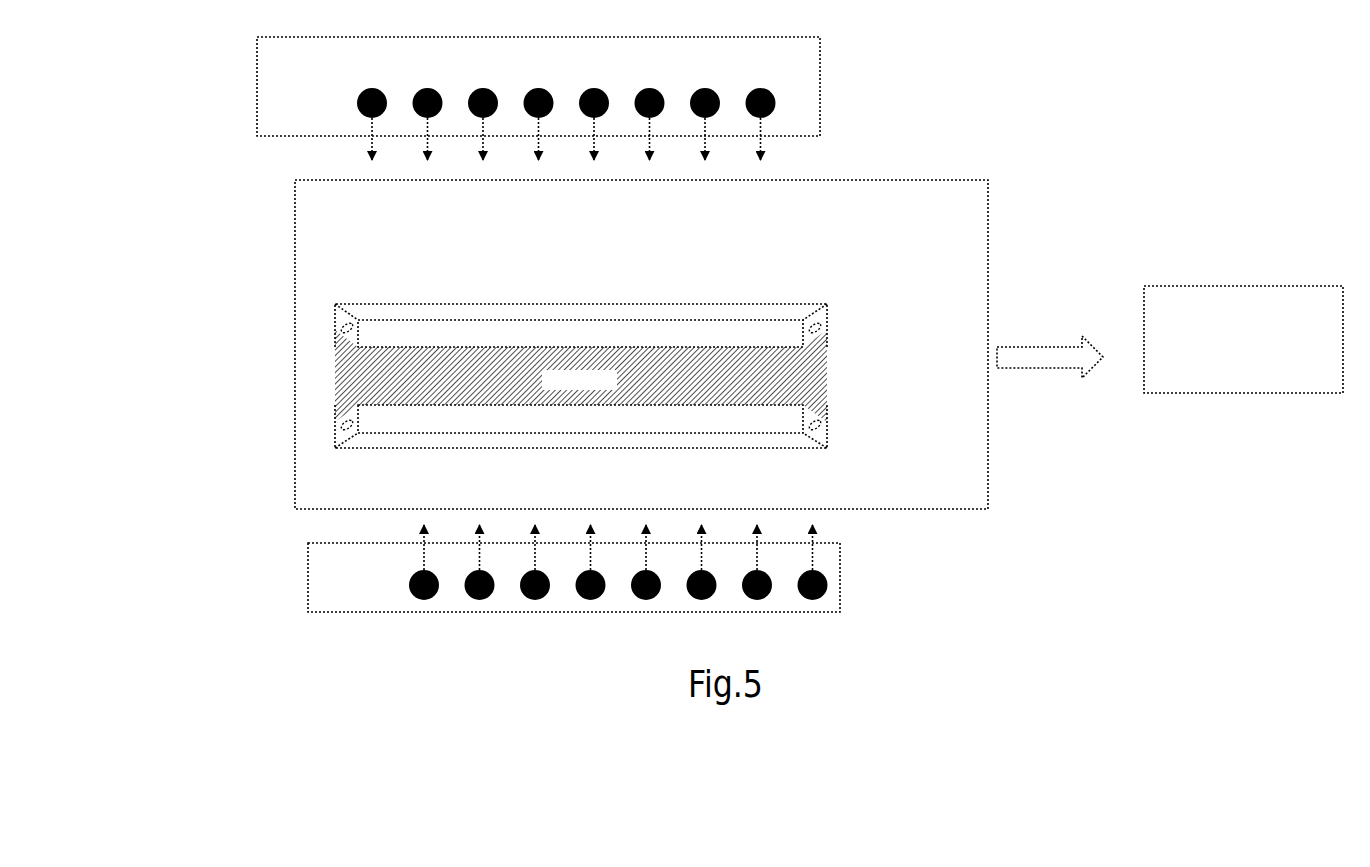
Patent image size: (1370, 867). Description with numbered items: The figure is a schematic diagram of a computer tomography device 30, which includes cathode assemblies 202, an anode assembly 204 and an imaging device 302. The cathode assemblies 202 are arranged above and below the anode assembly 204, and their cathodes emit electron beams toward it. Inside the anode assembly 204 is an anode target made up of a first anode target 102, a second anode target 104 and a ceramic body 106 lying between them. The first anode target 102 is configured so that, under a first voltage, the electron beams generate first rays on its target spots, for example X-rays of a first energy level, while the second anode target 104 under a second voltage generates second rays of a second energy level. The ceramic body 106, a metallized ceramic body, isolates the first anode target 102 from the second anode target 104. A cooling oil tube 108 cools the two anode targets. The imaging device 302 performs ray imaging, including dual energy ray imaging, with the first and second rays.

The computer tomography device 30 is at (192, 109).
The cathode assemblies 202 is at (548, 324).
The anode assembly 204 is at (641, 344).
The first anode target 102 is at (810, 282).
The second anode target 104 is at (793, 473).
The ceramic body 106 is at (827, 373).
The cooling oil tube 108 is at (827, 323).
The imaging device 302 is at (1170, 339).